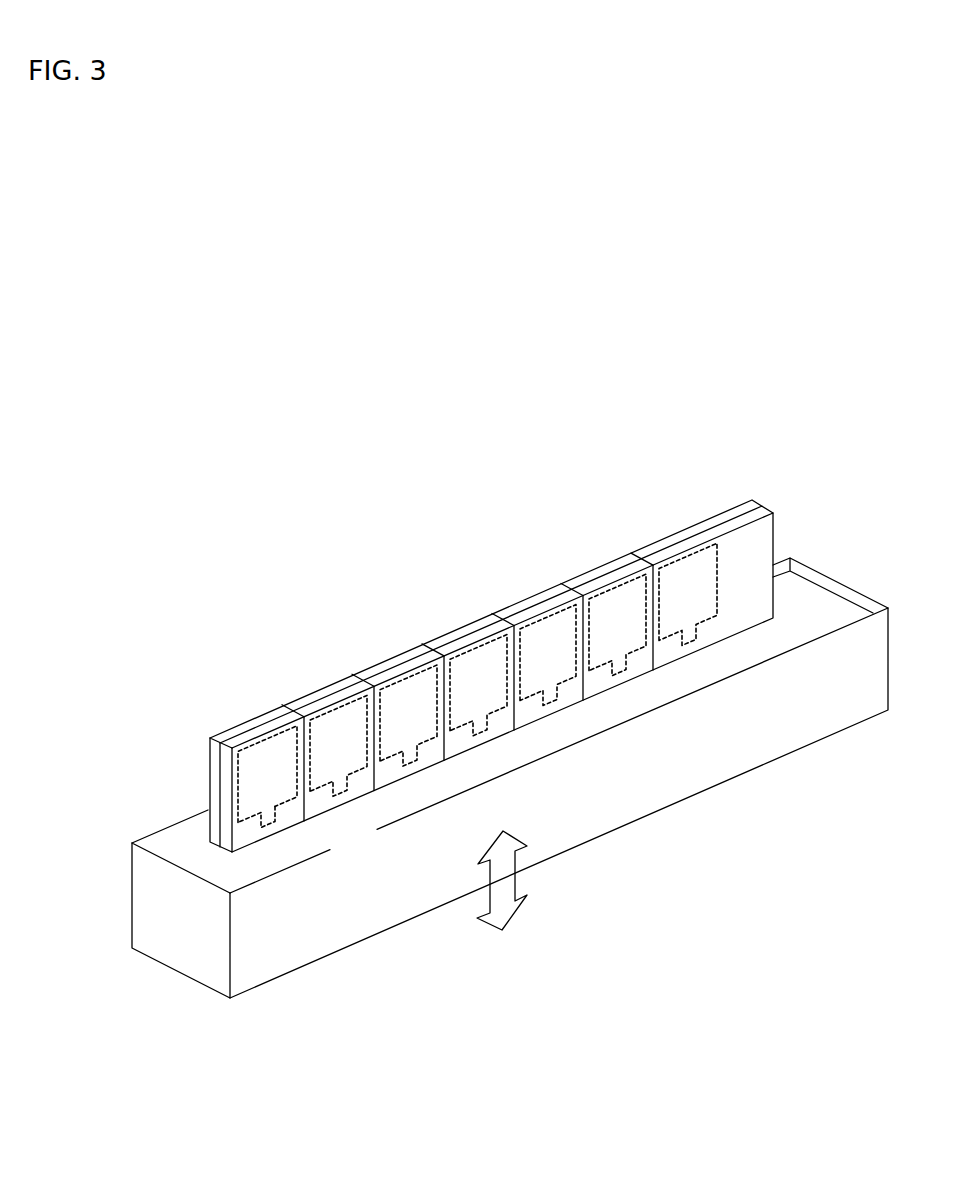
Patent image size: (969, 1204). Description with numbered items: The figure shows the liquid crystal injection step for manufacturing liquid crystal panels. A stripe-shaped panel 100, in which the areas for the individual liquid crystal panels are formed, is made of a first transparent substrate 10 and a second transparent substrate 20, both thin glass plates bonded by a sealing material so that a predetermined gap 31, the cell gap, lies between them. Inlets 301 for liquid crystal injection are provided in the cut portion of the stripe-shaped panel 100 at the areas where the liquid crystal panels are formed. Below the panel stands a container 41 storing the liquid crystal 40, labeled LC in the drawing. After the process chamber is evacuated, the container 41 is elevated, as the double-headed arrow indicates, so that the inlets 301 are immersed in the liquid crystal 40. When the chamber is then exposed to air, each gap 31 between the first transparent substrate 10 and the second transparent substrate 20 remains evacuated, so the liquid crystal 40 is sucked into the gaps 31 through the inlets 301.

The stripe-shaped panel 100 is at (563, 584).
The first transparent substrate 10 is at (495, 630).
The second transparent substrate 20 is at (403, 650).
The gap 31 is at (260, 713).
The liquid crystal 40 is at (487, 781).
The container 41 is at (570, 825).
The inlet for liquid crystal injection 301 is at (263, 823).
The liquid crystal panel label LC is at (373, 839).